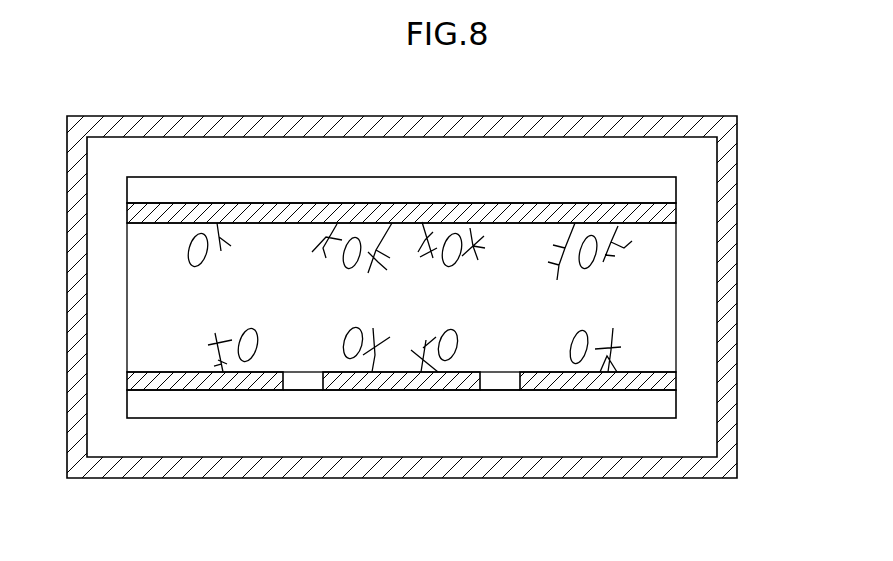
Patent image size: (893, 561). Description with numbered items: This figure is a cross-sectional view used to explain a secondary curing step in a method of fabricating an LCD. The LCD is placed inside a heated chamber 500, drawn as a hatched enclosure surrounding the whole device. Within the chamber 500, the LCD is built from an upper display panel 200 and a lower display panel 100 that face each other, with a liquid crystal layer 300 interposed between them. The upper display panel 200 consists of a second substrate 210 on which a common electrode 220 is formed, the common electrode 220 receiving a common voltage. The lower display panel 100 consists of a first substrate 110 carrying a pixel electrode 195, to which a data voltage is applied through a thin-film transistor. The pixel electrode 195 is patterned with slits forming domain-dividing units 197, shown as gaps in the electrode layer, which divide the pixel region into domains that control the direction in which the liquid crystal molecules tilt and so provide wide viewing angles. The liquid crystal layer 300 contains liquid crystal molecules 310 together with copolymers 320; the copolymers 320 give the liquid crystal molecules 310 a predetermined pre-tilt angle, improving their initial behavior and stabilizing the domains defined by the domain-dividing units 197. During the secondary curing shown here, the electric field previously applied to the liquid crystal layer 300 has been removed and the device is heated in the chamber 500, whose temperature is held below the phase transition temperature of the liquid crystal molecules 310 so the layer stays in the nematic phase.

The chamber 500 is at (728, 463).
The upper display panel 200 is at (475, 201).
The second substrate 210 is at (667, 189).
The common electrode 220 is at (680, 212).
The liquid crystal layer 300 is at (475, 297).
The copolymers 320 is at (607, 242).
The liquid crystal molecules 310 is at (588, 330).
The lower display panel 100 is at (475, 439).
The pixel electrode 195 is at (672, 378).
The first substrate 110 is at (667, 405).
The domain-dividing units 197 is at (490, 381).